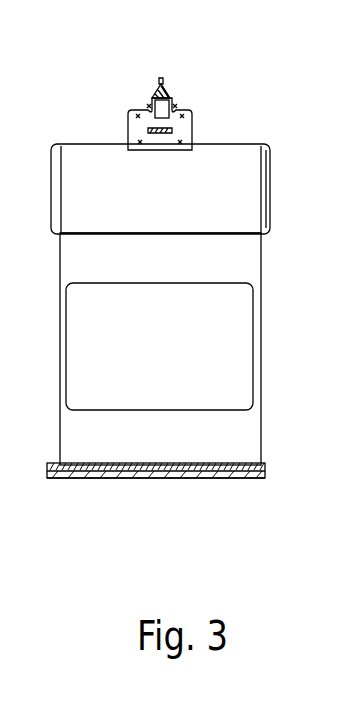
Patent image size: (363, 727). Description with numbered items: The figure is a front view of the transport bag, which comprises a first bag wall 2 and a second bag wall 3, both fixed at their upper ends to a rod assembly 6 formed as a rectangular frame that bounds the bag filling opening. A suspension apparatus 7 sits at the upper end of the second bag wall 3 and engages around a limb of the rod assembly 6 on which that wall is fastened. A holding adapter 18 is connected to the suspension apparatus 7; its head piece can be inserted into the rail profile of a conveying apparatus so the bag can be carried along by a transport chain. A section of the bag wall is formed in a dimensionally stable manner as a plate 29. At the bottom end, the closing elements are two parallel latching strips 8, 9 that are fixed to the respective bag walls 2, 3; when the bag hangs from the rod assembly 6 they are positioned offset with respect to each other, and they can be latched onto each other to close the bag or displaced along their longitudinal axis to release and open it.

The first bag wall 2 is at (240, 260).
The second bag wall 3 is at (240, 158).
The rod assembly 6 is at (270, 175).
The suspension apparatus 7 is at (190, 130).
The latching strip 8 is at (86, 478).
The latching strip 9 is at (270, 467).
The holding adapter 18 is at (165, 80).
The plate 29 is at (237, 388).